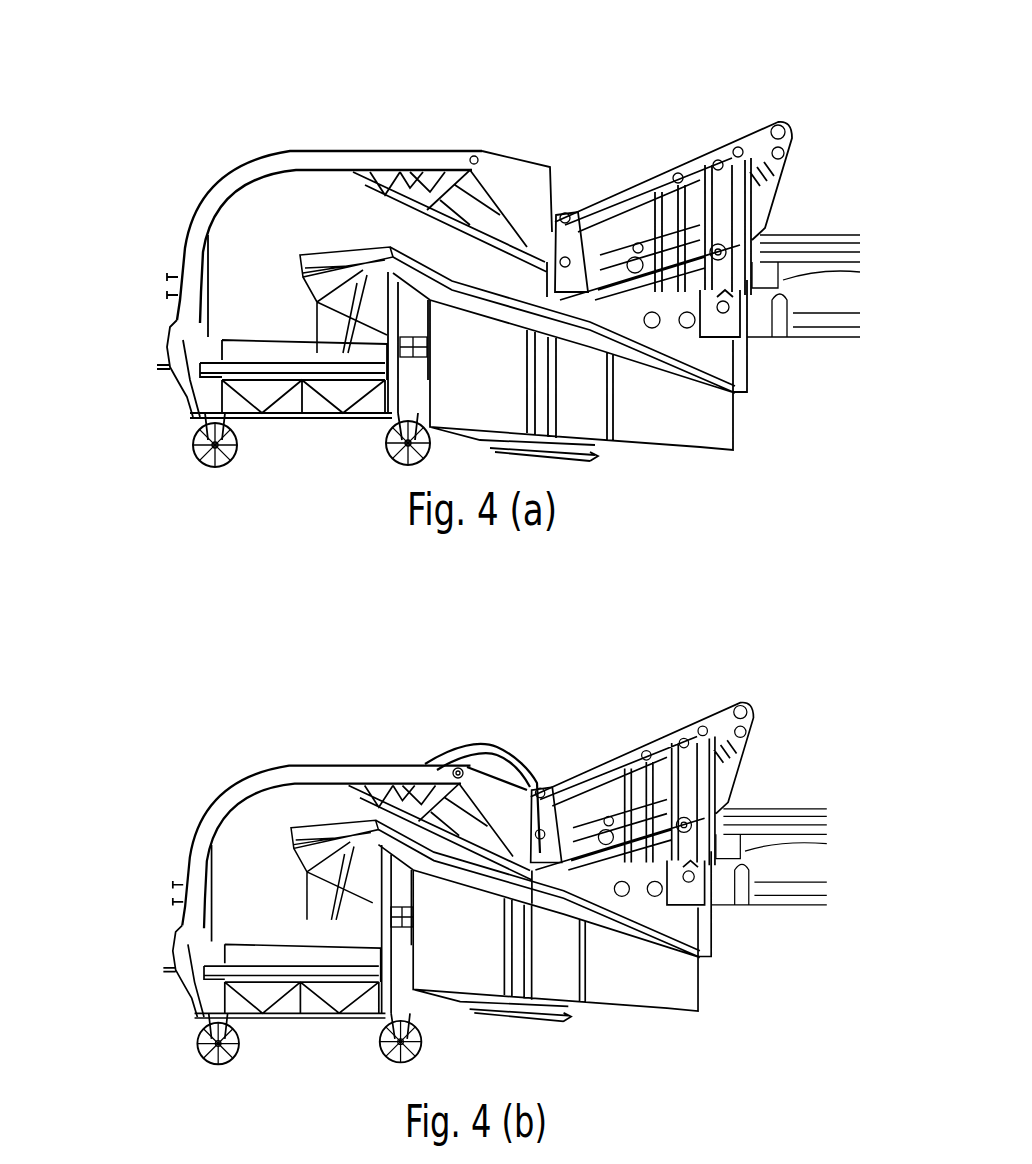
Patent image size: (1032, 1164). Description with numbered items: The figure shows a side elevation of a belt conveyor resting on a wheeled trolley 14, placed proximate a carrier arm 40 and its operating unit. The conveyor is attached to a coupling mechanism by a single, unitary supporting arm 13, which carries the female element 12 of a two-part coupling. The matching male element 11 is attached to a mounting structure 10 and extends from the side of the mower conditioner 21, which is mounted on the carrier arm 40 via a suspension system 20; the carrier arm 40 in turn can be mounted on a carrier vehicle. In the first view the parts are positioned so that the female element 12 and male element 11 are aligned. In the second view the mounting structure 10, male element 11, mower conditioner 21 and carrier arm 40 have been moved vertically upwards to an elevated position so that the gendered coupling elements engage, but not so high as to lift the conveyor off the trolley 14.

In FIG. 4B, the mounting structure 10 is at (552, 815).
In FIG. 4A, the male element 11 is at (556, 248).
In FIG. 4A, the female element 12 is at (509, 170).
In FIG. 4B, the female element 12 is at (497, 790).
In FIG. 4A, the supporting arm 13 is at (210, 190).
In FIG. 4B, the supporting arm 13 is at (215, 800).
In FIG. 4A, the trolley 14 is at (205, 383).
In FIG. 4B, the trolley 14 is at (205, 995).
In FIG. 4A, the suspension system 20 is at (638, 185).
In FIG. 4A, the mower conditioner 21 is at (752, 426).
In FIG. 4B, the mower conditioner 21 is at (722, 980).
In FIG. 4B, the carrier arm 40 is at (671, 715).